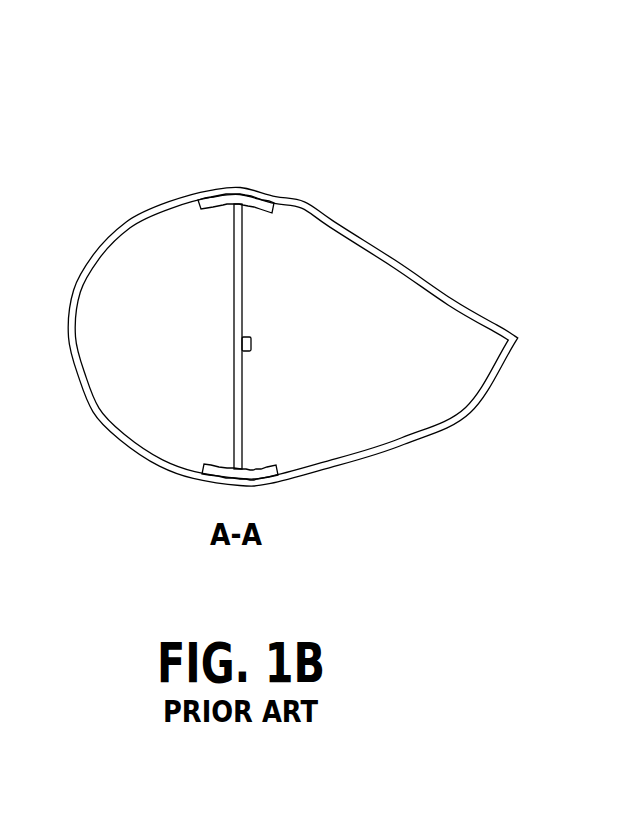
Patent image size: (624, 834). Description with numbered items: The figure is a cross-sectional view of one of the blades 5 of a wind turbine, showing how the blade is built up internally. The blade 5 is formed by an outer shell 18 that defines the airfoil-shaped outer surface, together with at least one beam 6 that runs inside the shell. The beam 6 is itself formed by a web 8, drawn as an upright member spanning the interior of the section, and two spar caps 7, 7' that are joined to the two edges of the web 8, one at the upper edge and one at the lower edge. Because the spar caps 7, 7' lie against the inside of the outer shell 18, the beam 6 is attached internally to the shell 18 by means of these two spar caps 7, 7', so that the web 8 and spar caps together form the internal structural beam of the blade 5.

The blade 5 is at (232, 168).
The beam 6 is at (286, 387).
The spar cap 7 is at (273, 166).
The spar cap 7' is at (166, 508).
The web 8 is at (239, 371).
The outer shell 18 is at (394, 258).